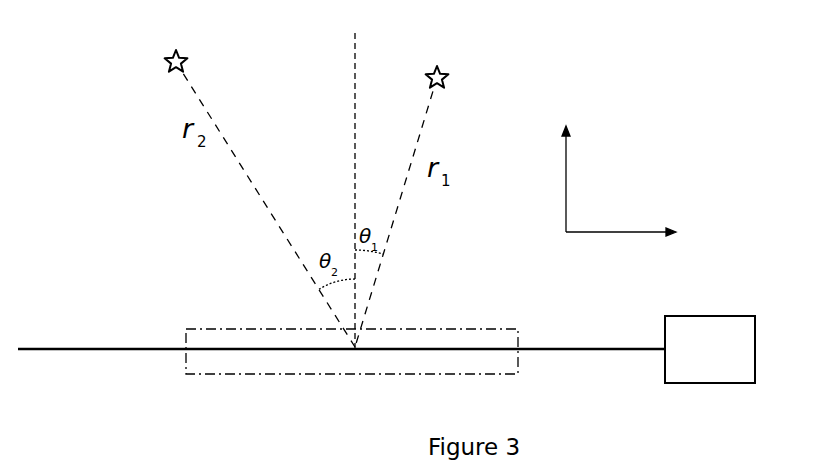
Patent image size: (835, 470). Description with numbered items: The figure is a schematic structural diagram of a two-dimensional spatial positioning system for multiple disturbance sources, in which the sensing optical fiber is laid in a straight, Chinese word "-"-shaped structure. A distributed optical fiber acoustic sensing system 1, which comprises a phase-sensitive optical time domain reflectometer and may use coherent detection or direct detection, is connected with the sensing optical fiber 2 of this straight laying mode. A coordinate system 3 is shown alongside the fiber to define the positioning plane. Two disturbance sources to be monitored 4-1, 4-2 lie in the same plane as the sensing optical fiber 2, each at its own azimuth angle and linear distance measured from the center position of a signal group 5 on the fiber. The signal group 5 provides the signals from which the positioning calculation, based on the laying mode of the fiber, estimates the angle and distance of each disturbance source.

The distributed optical fiber acoustic sensing system 1 is at (717, 328).
The sensing optical fiber 2 is at (341, 328).
The coordinate system 3 is at (622, 179).
The disturbance source to be monitored 4-1 is at (448, 193).
The disturbance source to be monitored 4-2 is at (260, 181).
The signal group 5 is at (352, 376).